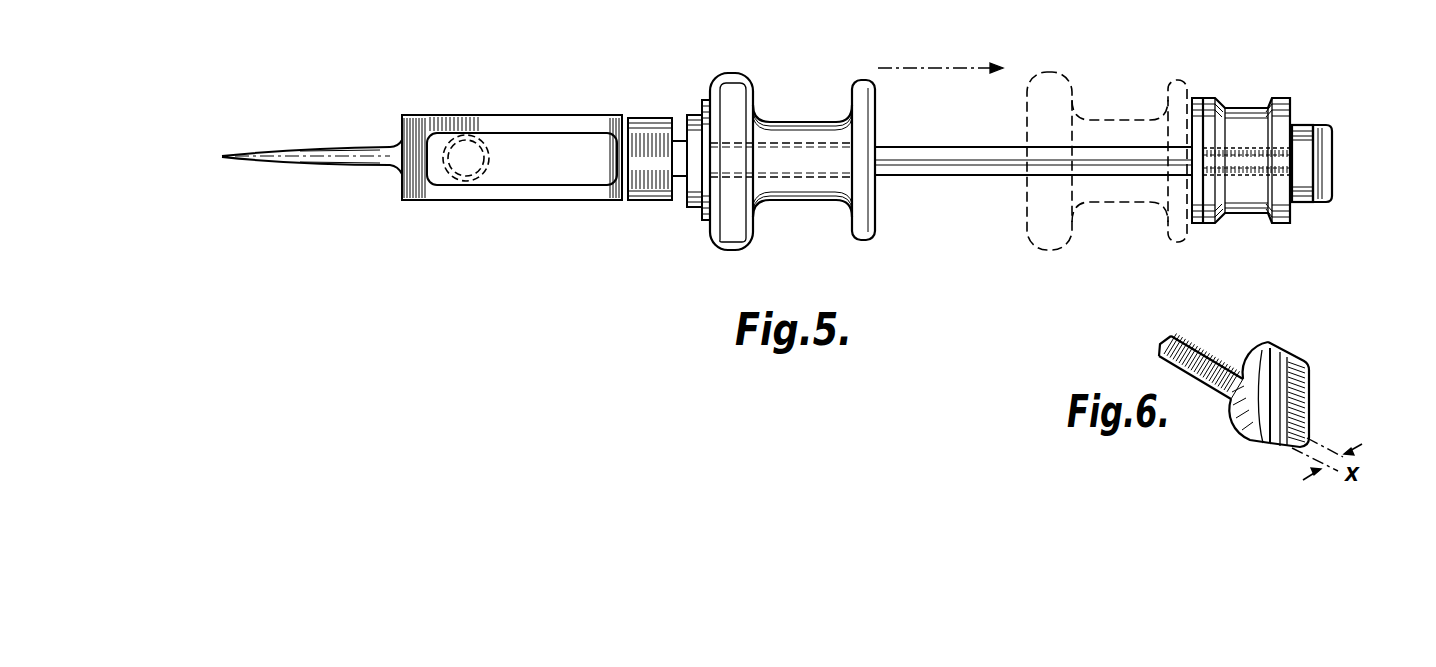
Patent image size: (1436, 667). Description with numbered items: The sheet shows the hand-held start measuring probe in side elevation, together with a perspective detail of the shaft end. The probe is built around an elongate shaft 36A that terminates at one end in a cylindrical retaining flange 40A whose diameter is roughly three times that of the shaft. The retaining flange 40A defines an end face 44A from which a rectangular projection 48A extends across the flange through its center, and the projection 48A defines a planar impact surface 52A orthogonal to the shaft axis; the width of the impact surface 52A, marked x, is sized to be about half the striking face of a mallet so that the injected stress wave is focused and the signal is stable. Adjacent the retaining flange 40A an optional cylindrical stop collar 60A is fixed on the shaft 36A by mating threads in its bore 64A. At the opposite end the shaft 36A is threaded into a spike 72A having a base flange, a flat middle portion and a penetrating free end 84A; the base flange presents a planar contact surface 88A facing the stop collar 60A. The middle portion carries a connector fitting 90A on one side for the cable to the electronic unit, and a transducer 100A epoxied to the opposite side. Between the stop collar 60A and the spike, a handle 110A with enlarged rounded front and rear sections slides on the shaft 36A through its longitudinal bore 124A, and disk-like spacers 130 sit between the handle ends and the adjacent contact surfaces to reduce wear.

In FIG. 5, the elongate shaft 36A is at (975, 150).
In FIG. 6, the elongate shaft 36A is at (1210, 345).
In FIG. 5, the retaining flange 40A is at (1303, 127).
In FIG. 6, the retaining flange 40A is at (1267, 375).
In FIG. 6, the end face 44A is at (1260, 428).
In FIG. 5, the projection 48A is at (1328, 190).
In FIG. 6, the projection 48A is at (1267, 372).
In FIG. 5, the impact surface 52A is at (1332, 148).
In FIG. 6, the impact surface 52A is at (1300, 428).
In FIG. 5, the stop collar 60A is at (1252, 115).
In FIG. 5, the bore 64A is at (1243, 183).
In FIG. 5, the spike 72A is at (540, 112).
In FIG. 5, the penetrating free end 84A is at (268, 150).
In FIG. 5, the planar contact surface 88A is at (705, 222).
In FIG. 5, the connector fitting 90A is at (450, 147).
In FIG. 5, the transducer 100A is at (553, 180).
In FIG. 5, the handle 110A is at (798, 123).
In FIG. 5, the longitudinal bore 124A is at (805, 177).
In FIG. 5, the spacers 130 is at (705, 100).